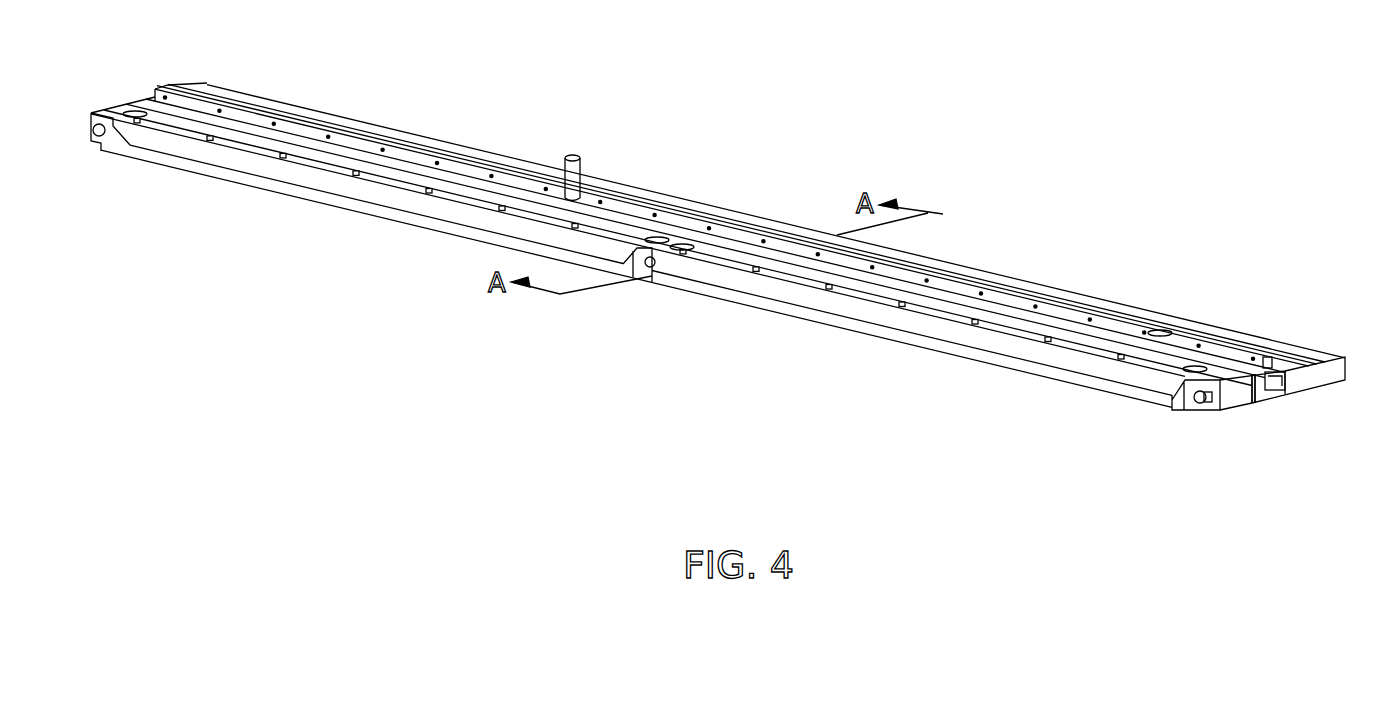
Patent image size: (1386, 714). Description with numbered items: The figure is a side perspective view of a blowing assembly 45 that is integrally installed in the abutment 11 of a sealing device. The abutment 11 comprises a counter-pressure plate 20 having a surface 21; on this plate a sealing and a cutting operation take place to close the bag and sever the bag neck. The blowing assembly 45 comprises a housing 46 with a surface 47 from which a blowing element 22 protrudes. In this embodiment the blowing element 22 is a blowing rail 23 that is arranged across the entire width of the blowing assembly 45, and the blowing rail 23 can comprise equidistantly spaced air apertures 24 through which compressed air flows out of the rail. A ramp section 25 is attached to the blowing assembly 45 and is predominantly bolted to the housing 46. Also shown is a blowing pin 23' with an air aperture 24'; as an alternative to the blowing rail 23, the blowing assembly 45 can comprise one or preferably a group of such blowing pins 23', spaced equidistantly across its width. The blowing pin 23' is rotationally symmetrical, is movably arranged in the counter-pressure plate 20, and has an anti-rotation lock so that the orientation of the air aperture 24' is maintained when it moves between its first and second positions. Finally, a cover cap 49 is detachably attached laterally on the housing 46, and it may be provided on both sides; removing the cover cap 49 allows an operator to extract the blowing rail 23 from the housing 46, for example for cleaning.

The abutment 11 is at (1068, 244).
The counter-pressure plate 20 is at (1332, 380).
The surface 21 is at (1306, 351).
The blowing element 22 is at (1230, 330).
The blowing rail 23 is at (1276, 329).
The air apertures 24 is at (665, 241).
The ramp section 25 is at (1040, 355).
The blowing assembly 45 is at (1266, 420).
The housing 46 is at (1253, 397).
The surface 47 is at (1272, 391).
The cover cap 49 is at (1286, 387).
The blowing pin 23' is at (574, 145).
The air aperture 24' is at (596, 147).